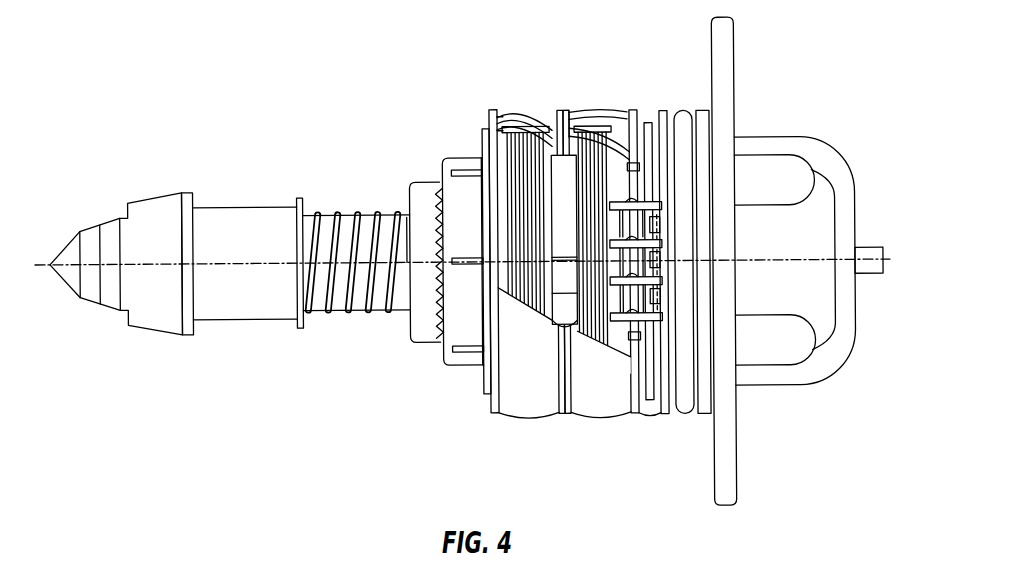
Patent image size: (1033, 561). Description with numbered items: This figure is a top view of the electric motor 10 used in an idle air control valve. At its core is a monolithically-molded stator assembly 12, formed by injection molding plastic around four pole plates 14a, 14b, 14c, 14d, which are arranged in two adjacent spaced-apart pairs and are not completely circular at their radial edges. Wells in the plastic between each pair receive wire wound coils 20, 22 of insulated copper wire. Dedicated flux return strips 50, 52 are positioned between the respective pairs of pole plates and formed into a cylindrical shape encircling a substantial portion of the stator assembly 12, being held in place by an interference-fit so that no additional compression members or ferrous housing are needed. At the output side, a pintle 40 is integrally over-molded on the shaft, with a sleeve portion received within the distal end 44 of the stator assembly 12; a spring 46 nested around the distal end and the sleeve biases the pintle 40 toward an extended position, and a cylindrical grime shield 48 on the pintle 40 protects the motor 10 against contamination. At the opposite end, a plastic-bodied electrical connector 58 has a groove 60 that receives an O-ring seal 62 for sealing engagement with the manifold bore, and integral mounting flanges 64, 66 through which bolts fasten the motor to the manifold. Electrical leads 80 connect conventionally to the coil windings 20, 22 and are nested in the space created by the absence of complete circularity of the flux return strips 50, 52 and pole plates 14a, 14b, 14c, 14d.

The motor 10 is at (220, 91).
The stator assembly 12 is at (482, 147).
The pole plate 14a is at (497, 417).
The pole plate 14b is at (562, 417).
The pole plate 14c is at (568, 417).
The pole plate 14d is at (640, 417).
The wire wound coil 20 is at (520, 113).
The wire wound coil 22 is at (605, 140).
The pintle 40 is at (167, 203).
The distal end of the stator assembly 44 is at (390, 209).
The spring 46 is at (358, 207).
The grime shield 48 is at (265, 206).
The flux return strip 50 is at (538, 113).
The flux return strip 52 is at (610, 110).
The electrical connector 58 is at (838, 172).
The groove 60 is at (671, 102).
The O-ring seal 62 is at (683, 111).
The mounting flange 64 is at (728, 457).
The mounting flange 66 is at (723, 55).
The electrical leads 80 is at (662, 319).